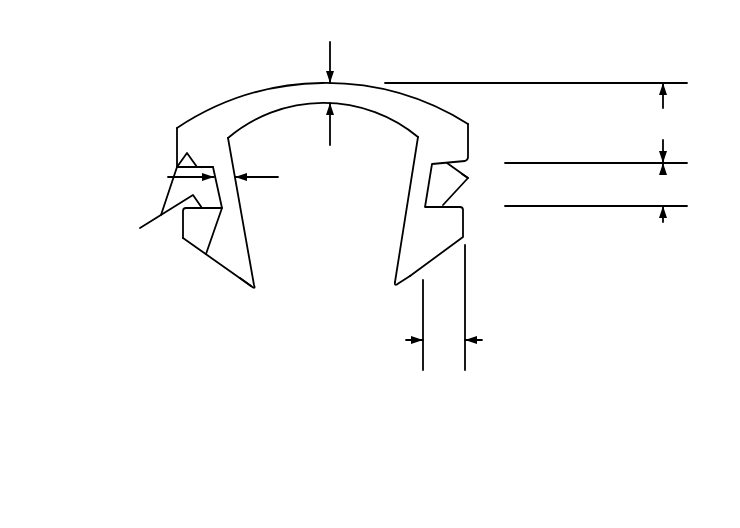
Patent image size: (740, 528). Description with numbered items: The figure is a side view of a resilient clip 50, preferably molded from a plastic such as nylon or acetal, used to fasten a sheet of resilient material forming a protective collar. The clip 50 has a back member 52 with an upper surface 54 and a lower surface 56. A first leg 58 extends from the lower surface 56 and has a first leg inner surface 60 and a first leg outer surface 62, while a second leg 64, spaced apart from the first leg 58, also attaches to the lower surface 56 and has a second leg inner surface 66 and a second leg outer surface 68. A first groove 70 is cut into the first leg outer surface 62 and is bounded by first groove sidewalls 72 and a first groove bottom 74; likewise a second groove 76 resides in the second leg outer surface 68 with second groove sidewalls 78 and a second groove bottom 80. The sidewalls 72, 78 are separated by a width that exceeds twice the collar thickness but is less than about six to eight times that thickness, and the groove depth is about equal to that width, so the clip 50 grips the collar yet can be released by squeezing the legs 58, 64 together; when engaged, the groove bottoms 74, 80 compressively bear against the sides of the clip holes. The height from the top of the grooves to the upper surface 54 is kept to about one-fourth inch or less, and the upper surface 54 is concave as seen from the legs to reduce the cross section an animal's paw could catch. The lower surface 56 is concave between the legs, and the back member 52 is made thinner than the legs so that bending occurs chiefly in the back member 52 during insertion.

The resilient clip 50 is at (162, 307).
The back member 52 is at (224, 94).
The upper surface 54 is at (427, 103).
The lower surface 56 is at (378, 114).
The first leg 58 is at (229, 272).
The first leg inner surface 60 is at (246, 226).
The first leg outer surface 62 is at (177, 151).
The second leg 64 is at (396, 290).
The second leg inner surface 66 is at (397, 240).
The second leg outer surface 68 is at (463, 223).
The first groove 70 is at (133, 197).
The first groove sidewalls 72 is at (193, 197).
The first groove bottom 74 is at (207, 250).
The second groove 76 is at (478, 182).
The second groove sidewalls 78 is at (468, 178).
The second groove bottom 80 is at (468, 178).